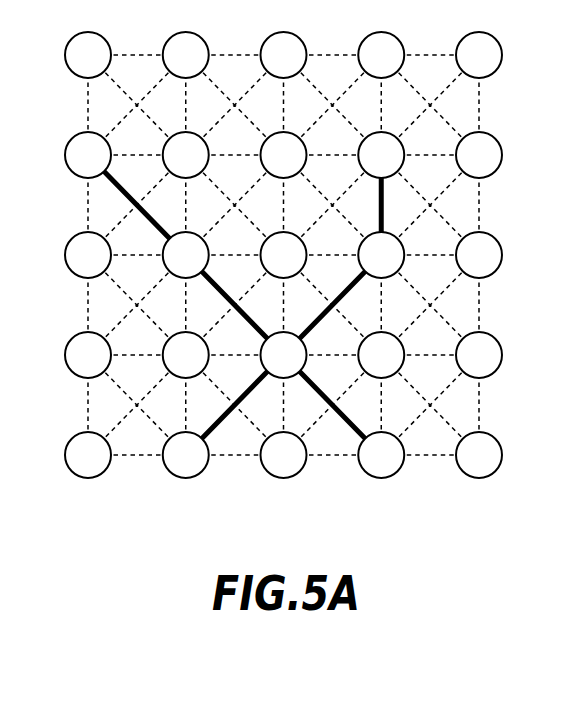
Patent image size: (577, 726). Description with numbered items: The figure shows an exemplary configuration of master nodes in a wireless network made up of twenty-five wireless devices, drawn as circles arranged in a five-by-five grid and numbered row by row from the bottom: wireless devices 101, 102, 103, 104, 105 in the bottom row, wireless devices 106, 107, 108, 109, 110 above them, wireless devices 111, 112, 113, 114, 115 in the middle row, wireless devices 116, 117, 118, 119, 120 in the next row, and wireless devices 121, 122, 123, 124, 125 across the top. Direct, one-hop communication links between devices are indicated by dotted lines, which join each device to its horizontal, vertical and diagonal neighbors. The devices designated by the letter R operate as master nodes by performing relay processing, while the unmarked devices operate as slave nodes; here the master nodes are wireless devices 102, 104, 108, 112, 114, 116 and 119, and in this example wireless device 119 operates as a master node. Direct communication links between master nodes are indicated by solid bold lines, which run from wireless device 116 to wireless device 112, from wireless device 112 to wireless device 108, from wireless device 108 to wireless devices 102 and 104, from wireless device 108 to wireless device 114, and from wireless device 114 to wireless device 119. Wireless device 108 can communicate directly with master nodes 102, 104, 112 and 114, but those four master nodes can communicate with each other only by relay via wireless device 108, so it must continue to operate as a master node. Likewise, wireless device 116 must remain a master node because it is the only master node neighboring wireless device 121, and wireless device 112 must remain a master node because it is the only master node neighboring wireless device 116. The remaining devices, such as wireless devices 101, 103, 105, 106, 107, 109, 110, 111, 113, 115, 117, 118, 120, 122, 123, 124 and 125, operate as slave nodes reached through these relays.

The wireless device 101 is at (88, 468).
The wireless device 102 is at (186, 468).
The wireless device 103 is at (284, 468).
The wireless device 104 is at (381, 468).
The wireless device 105 is at (479, 468).
The wireless device 106 is at (71, 358).
The wireless device 107 is at (203, 358).
The wireless device 108 is at (301, 358).
The wireless device 109 is at (398, 358).
The wireless device 110 is at (491, 364).
The wireless device 111 is at (71, 258).
The wireless device 112 is at (203, 258).
The wireless device 113 is at (301, 255).
The wireless device 114 is at (398, 255).
The wireless device 115 is at (491, 264).
The wireless device 116 is at (71, 158).
The wireless device 117 is at (203, 158).
The wireless device 118 is at (301, 158).
The wireless device 119 is at (398, 158).
The wireless device 120 is at (491, 164).
The wireless device 121 is at (71, 58).
The wireless device 122 is at (203, 58).
The wireless device 123 is at (301, 58).
The wireless device 124 is at (398, 58).
The wireless device 125 is at (491, 64).